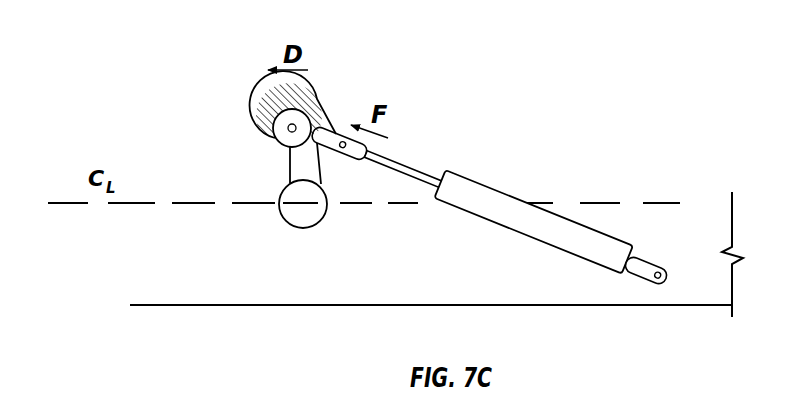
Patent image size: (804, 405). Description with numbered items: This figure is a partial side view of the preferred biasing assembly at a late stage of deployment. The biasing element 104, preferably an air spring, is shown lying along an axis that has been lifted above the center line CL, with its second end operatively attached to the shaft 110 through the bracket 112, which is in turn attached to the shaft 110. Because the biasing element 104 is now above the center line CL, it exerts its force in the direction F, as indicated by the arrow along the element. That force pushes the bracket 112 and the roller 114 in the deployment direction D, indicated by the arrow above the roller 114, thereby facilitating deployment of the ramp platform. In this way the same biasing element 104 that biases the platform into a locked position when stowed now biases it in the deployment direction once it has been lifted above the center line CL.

The biasing element 104 is at (520, 202).
The shaft 110 is at (288, 216).
The bracket 112 is at (289, 157).
The roller 114 is at (254, 104).